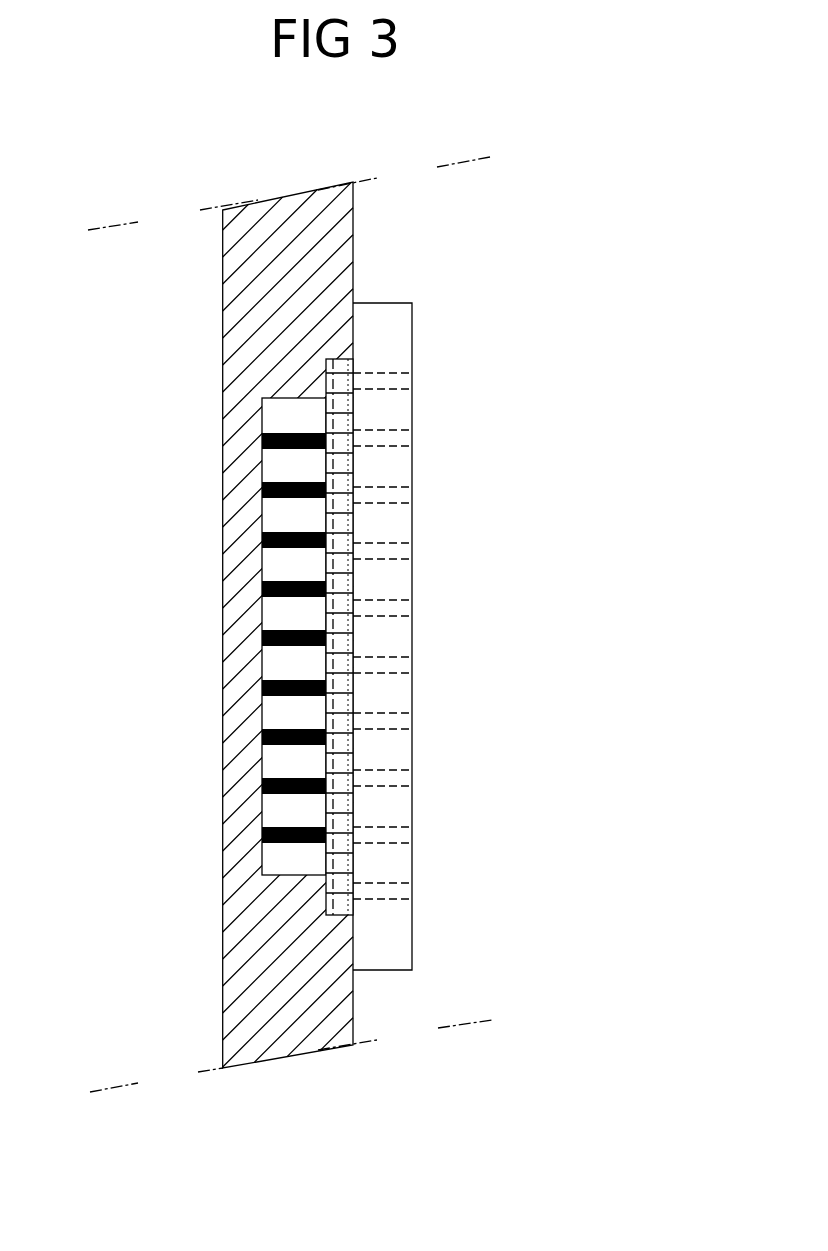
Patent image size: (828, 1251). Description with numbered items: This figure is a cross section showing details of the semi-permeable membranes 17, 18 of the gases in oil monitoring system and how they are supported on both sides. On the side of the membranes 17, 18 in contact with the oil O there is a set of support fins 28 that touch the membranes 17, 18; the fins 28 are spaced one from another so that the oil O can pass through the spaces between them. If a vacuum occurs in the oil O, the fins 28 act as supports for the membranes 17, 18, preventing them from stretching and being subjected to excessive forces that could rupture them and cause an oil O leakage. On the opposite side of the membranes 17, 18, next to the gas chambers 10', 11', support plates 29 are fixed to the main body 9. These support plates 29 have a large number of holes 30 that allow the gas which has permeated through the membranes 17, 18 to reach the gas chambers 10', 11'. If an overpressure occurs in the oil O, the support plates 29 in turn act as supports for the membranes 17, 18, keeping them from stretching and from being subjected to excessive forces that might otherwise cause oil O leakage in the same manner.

The main body 9 is at (352, 265).
The support plates 29 is at (413, 340).
The holes 30 is at (413, 438).
The oil O is at (228, 636).
The support fins 28 is at (298, 777).
The semi-permeable membrane 17 is at (443, 637).
The semi-permeable membrane 18 is at (348, 685).
The gas chamber 10' is at (501, 624).
The gas chamber 11' is at (501, 624).